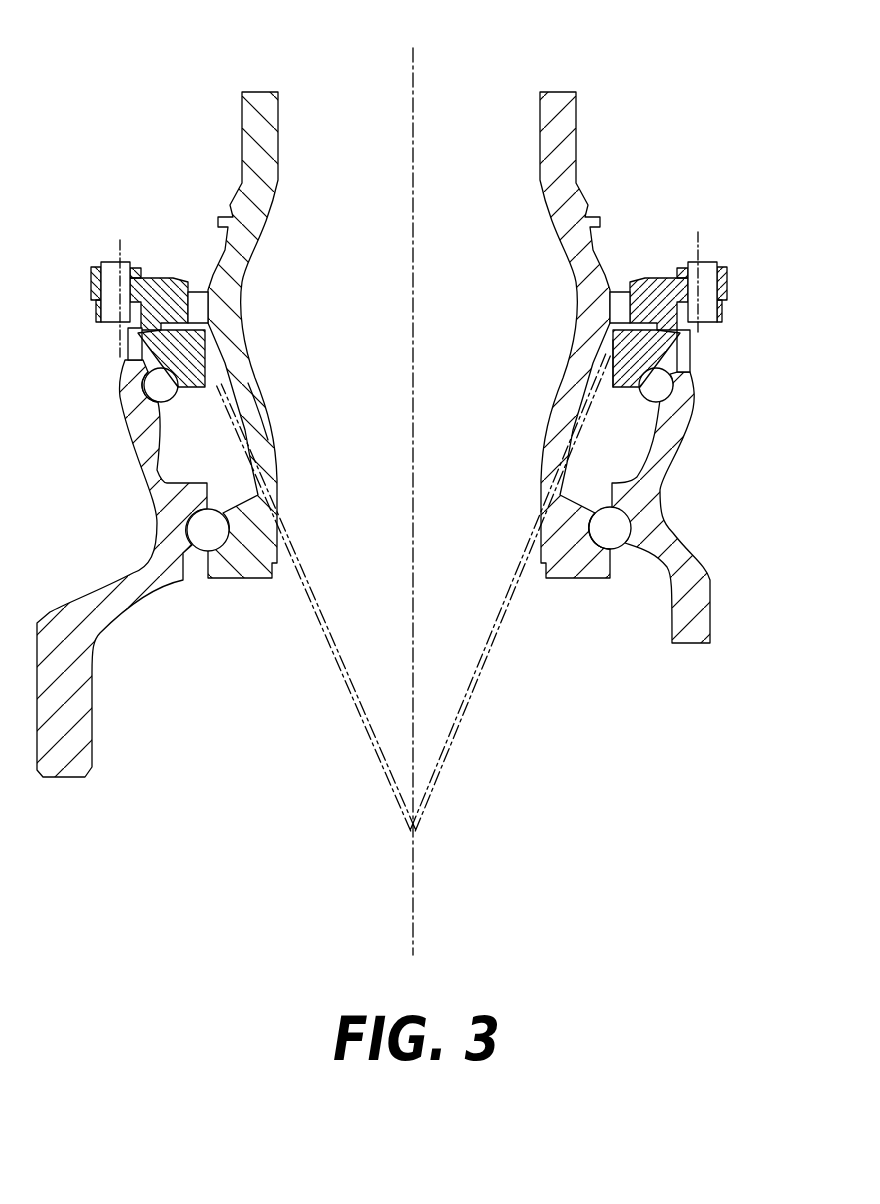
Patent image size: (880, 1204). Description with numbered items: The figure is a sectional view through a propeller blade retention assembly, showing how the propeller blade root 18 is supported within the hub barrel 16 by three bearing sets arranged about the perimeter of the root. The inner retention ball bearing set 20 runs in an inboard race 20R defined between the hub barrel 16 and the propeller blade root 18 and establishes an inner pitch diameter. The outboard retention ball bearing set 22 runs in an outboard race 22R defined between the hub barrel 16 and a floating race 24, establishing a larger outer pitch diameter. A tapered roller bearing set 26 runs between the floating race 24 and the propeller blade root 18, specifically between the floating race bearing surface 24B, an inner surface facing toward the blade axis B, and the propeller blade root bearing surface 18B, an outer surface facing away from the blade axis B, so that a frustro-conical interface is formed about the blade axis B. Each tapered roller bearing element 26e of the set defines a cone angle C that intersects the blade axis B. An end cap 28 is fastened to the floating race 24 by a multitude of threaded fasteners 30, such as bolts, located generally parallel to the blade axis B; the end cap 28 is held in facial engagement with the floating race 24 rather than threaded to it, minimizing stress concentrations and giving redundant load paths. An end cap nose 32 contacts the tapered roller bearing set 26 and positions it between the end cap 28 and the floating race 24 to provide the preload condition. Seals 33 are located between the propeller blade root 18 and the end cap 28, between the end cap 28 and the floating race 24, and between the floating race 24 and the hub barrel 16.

The hub barrel 16 is at (700, 582).
The propeller blade root 18 is at (558, 131).
The propeller blade root bearing surface 18B is at (248, 383).
The inner retention ball bearing set 20 is at (612, 529).
The inboard race 20R is at (607, 552).
The outboard retention ball bearing set 22 is at (648, 385).
The outboard race 22R is at (160, 388).
The floating race 24 is at (728, 310).
The floating race bearing surface 24B is at (195, 392).
The tapered roller bearing set 26 is at (612, 357).
The tapered roller bearing element 26e is at (604, 369).
The end cap 28 is at (727, 297).
The threaded fastener 30 is at (108, 266).
The end cap nose 32 is at (590, 326).
The seal 33 is at (665, 345).
The blade axis B is at (413, 87).
The cone angle C is at (373, 737).